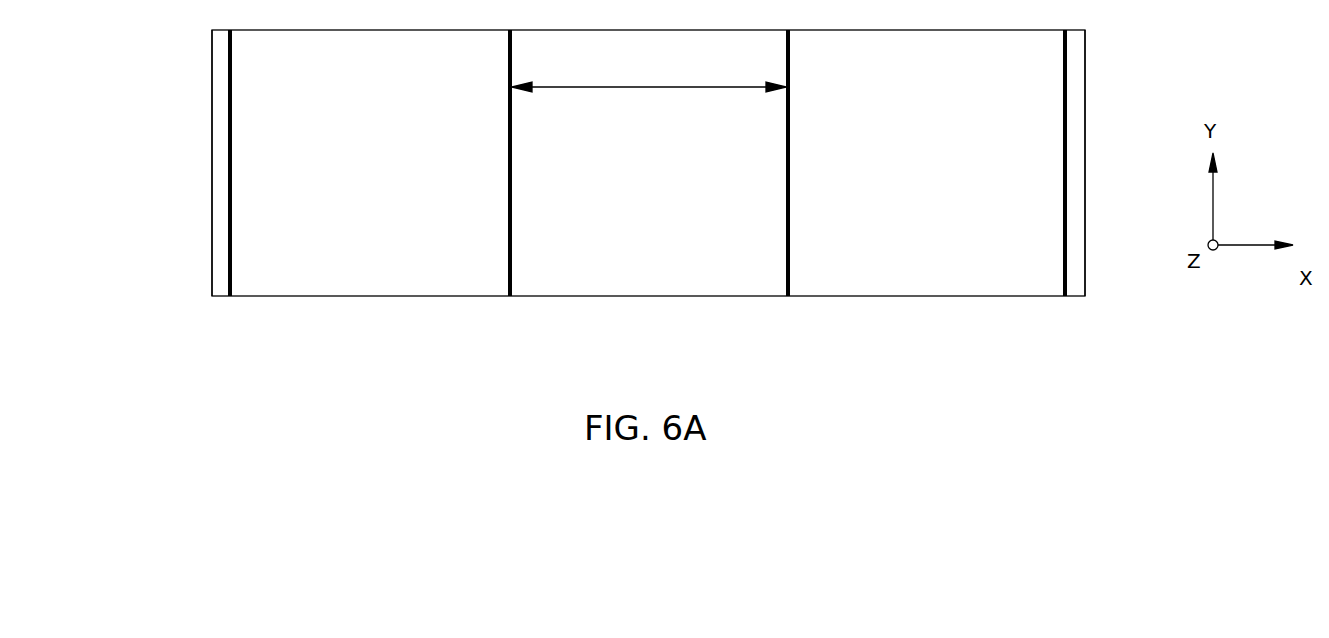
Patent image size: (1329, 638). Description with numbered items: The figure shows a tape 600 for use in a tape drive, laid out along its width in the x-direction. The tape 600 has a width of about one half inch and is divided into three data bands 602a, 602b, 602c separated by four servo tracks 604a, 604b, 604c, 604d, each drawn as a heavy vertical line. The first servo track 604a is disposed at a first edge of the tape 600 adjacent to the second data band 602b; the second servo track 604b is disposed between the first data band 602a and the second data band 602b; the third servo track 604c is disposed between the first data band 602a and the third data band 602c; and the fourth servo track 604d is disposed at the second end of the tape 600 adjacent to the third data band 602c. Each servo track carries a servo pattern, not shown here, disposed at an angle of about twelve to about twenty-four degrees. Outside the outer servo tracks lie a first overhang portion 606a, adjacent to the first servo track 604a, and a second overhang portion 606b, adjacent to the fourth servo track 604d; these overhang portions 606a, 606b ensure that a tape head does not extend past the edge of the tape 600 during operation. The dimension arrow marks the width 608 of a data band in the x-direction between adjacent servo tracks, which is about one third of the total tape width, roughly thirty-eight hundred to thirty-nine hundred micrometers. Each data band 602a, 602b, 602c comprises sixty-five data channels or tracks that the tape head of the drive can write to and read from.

The tape 600 is at (156, 73).
The first data band 602a is at (689, 270).
The second data band 602b is at (391, 270).
The third data band 602c is at (961, 270).
The first servo track 604a is at (230, 296).
The second servo track 604b is at (510, 296).
The third servo track 604c is at (788, 296).
The fourth servo track 604d is at (1065, 296).
The first overhang portion 606a is at (225, 177).
The second overhang portion 606b is at (1076, 112).
The width 608 is at (649, 77).